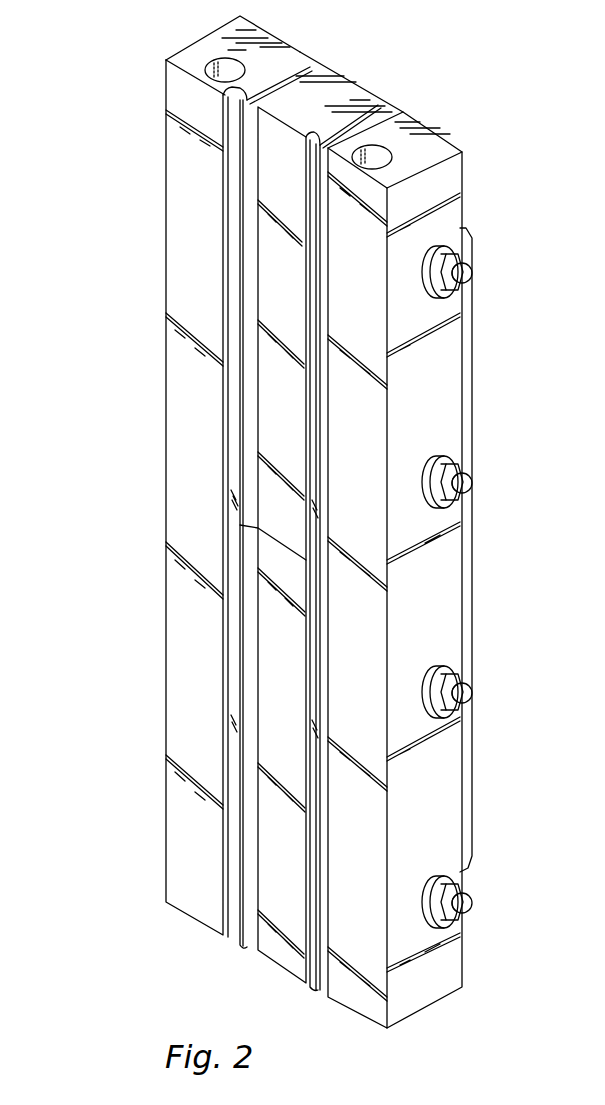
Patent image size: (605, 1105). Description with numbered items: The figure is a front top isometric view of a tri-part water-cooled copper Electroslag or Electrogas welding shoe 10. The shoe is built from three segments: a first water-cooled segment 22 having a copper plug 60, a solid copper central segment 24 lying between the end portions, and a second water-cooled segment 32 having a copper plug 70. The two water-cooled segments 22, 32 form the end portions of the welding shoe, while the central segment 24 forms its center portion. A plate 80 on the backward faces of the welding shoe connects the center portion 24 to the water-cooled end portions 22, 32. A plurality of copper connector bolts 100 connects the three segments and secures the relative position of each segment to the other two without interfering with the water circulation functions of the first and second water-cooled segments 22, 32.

The tri-part water-cooled copper Electroslag or Electrogas welding shoe 10 is at (126, 247).
The first water-cooled segment 22 is at (283, 55).
The solid copper central segment 24 is at (342, 95).
The second water-cooled segment 32 is at (380, 148).
The copper plug 60 is at (222, 70).
The copper plug 70 is at (380, 150).
The plate 80 is at (463, 775).
The copper connector bolts 100 is at (471, 260).